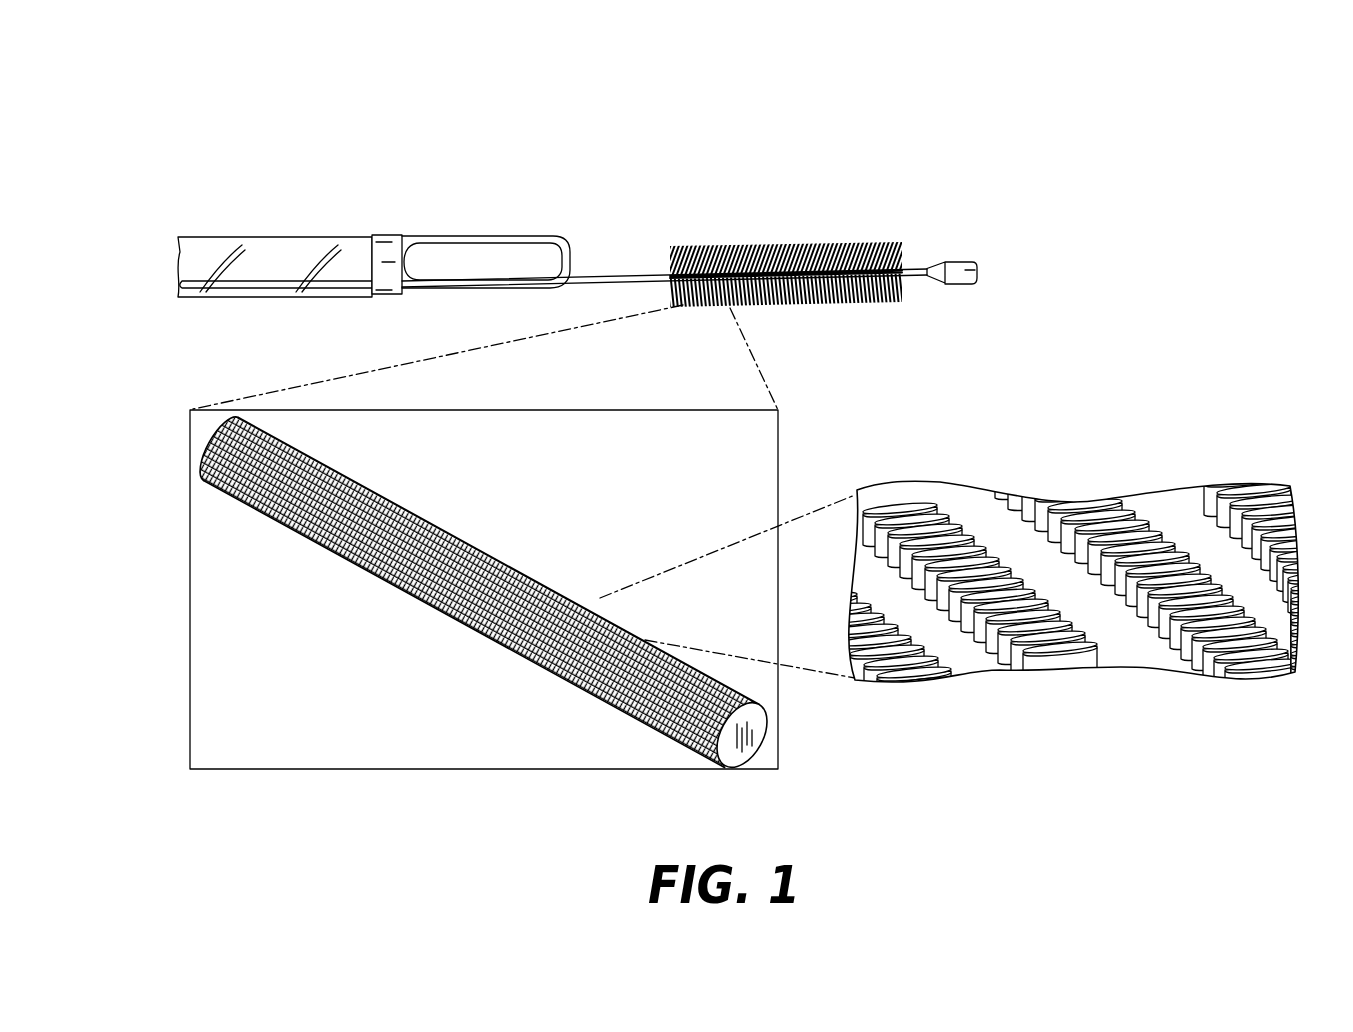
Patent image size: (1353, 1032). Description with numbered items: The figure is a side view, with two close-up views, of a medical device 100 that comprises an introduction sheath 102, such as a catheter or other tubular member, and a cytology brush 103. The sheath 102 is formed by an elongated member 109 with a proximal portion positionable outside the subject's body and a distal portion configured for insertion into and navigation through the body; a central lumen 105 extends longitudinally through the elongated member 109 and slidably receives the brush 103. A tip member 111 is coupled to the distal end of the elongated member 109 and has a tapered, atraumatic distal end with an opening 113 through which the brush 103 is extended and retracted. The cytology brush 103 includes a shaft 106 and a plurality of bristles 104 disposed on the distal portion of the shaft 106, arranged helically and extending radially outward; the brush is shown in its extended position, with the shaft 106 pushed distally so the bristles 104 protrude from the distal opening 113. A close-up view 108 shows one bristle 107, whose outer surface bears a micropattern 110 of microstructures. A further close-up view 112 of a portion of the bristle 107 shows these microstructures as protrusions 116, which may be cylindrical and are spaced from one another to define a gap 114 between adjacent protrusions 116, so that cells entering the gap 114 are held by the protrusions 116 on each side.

The medical device 100 is at (455, 162).
The introduction sheath 102 is at (247, 234).
The cytology brush 103 is at (731, 212).
The bristles 104 is at (835, 238).
The central lumen 105 is at (318, 240).
The shaft 106 is at (590, 275).
The bristle 107 is at (865, 303).
The close-up view 108 is at (230, 771).
The elongated member 109 is at (215, 300).
The micropattern 110 is at (470, 572).
The tip member 111 is at (392, 296).
The close-up view 112 is at (1165, 482).
The opening 113 is at (470, 290).
The gap 114 is at (935, 668).
The protrusions 116 is at (1040, 652).